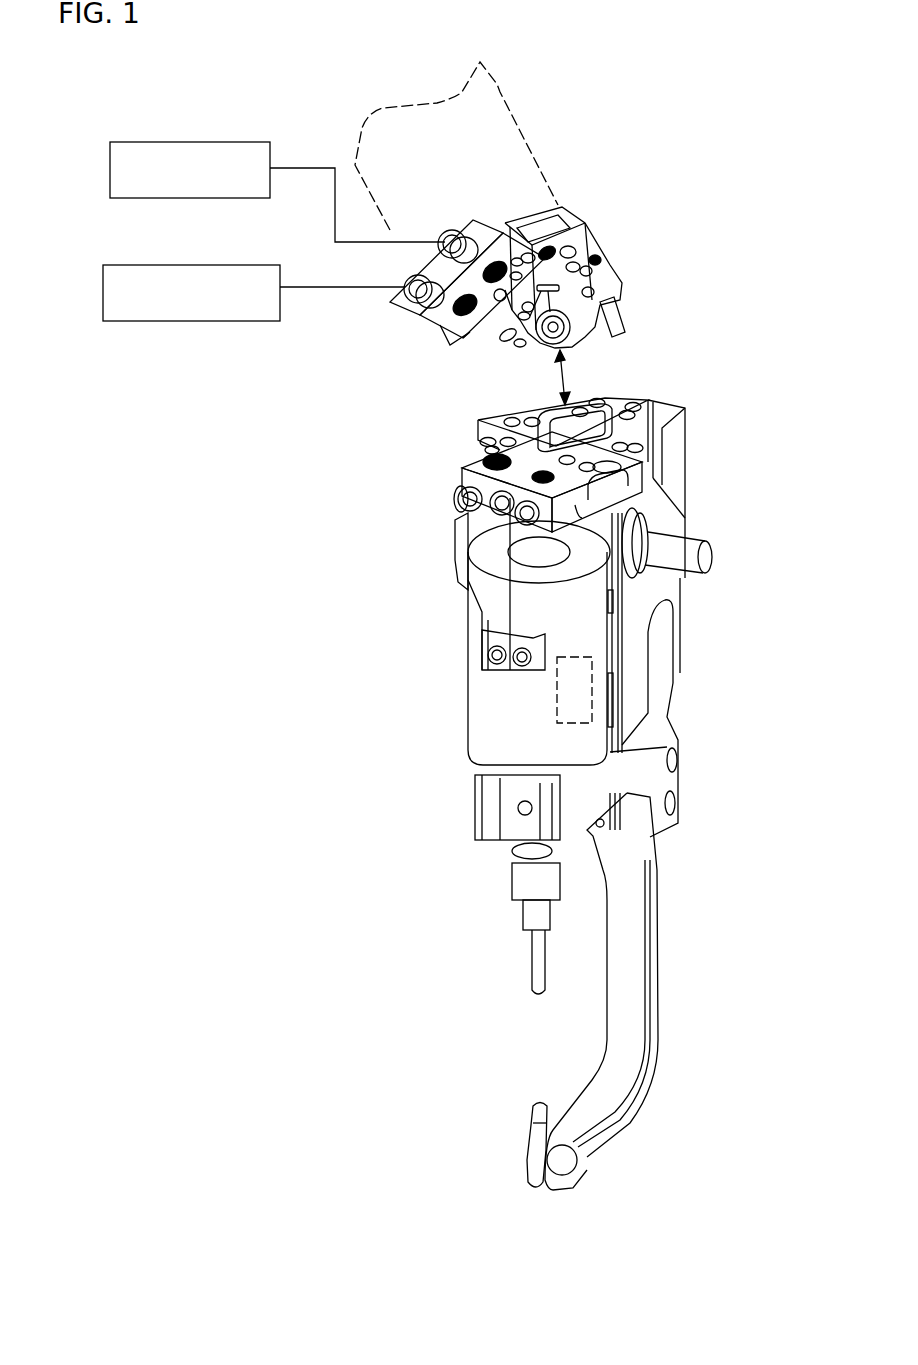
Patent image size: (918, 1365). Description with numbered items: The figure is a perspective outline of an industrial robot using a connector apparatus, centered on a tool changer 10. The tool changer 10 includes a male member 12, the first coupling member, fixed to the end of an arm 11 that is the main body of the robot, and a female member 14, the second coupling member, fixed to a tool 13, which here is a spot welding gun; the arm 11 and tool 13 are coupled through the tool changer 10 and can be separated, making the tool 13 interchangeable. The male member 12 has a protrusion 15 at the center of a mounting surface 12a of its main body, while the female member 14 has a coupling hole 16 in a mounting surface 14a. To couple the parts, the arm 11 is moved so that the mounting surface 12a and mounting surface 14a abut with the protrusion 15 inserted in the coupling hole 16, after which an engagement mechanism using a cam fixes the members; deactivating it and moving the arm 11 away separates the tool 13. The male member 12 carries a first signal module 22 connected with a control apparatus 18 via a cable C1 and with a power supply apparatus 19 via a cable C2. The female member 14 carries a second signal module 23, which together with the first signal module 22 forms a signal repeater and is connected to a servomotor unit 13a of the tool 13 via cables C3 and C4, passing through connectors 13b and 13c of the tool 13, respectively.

The tool changer 10 is at (535, 265).
The arm 11 is at (508, 86).
The male member 12 is at (613, 287).
The mounting surface 12a is at (597, 323).
The tool 13 is at (565, 844).
The servomotor unit 13a is at (592, 676).
The connector 13b is at (522, 672).
The connector 13c is at (492, 668).
The female member 14 is at (545, 469).
The mounting surface 14a is at (500, 430).
The protrusion 15 is at (523, 338).
The coupling hole 16 is at (560, 422).
The control apparatus 18 is at (240, 142).
The power supply apparatus 19 is at (240, 265).
The first signal module 22 is at (433, 326).
The second signal module 23 is at (475, 465).
The cable C1 is at (313, 166).
The cable C2 is at (320, 290).
The cable C3 is at (472, 689).
The cable C4 is at (448, 542).